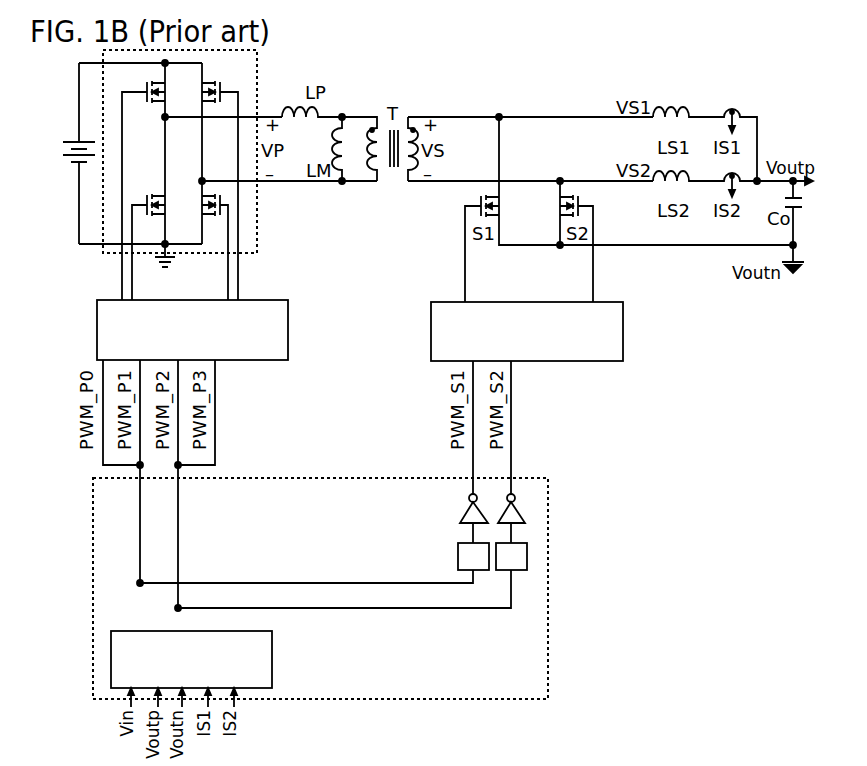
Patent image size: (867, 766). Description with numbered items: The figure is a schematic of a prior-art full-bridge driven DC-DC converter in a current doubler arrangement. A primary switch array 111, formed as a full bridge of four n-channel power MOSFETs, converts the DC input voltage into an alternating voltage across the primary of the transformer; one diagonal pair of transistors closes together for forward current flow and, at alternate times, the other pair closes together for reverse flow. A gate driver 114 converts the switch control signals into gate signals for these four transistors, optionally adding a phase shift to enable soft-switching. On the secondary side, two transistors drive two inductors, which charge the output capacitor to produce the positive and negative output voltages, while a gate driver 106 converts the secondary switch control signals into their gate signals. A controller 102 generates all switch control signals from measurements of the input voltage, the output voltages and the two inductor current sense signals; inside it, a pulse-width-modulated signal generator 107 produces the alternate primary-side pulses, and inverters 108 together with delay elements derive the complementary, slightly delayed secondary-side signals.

The primary switch array 111 is at (257, 237).
The gate driver 114 is at (245, 362).
The gate driver 106 is at (578, 363).
The controller 102 is at (320, 602).
The inverters 108 is at (452, 493).
The pulse-width-modulated signal generator 107 is at (275, 668).